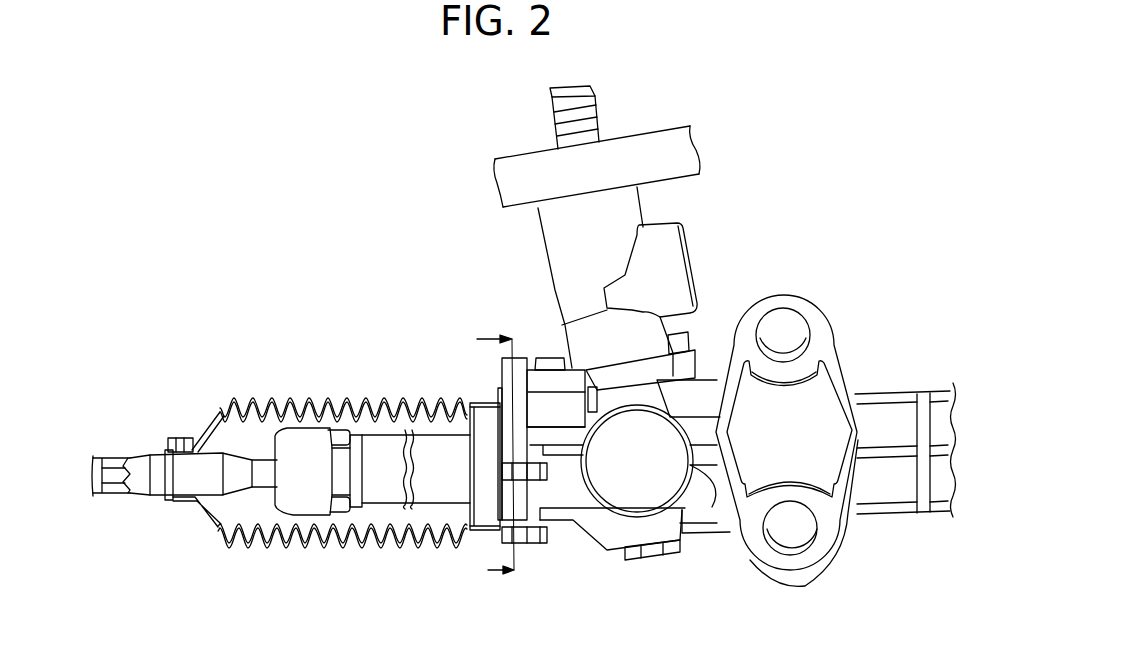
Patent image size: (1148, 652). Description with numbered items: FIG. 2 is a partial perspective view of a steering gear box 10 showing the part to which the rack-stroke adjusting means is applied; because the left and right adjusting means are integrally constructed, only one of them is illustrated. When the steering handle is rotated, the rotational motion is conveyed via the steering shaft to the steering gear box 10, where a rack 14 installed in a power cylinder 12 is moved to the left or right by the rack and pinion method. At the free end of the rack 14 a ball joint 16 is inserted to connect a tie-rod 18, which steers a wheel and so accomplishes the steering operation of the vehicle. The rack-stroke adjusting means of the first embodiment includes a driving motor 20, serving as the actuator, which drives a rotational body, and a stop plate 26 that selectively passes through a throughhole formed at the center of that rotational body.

The steering gear box 10 is at (702, 226).
The power cylinder 12 is at (692, 422).
The rack 14 is at (380, 438).
The ball joint 16 is at (287, 430).
The tie-rod 18 is at (142, 460).
The driving motor 20 is at (542, 377).
The stop plate 26 is at (355, 430).